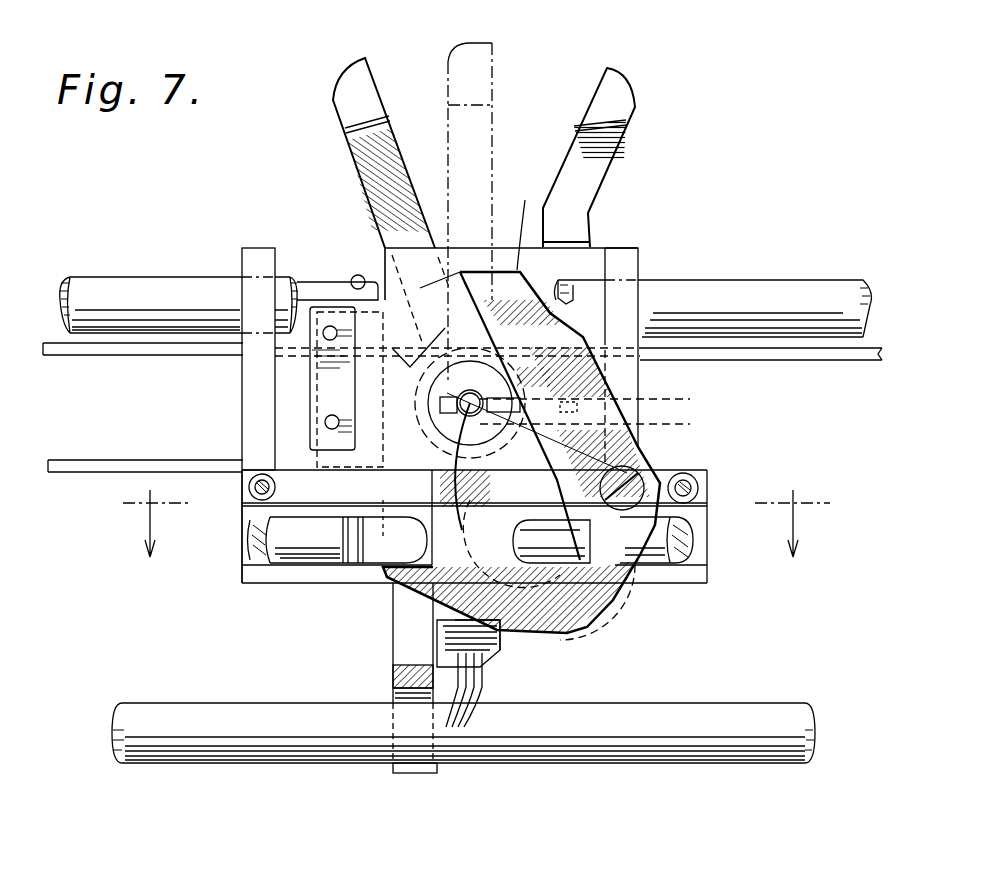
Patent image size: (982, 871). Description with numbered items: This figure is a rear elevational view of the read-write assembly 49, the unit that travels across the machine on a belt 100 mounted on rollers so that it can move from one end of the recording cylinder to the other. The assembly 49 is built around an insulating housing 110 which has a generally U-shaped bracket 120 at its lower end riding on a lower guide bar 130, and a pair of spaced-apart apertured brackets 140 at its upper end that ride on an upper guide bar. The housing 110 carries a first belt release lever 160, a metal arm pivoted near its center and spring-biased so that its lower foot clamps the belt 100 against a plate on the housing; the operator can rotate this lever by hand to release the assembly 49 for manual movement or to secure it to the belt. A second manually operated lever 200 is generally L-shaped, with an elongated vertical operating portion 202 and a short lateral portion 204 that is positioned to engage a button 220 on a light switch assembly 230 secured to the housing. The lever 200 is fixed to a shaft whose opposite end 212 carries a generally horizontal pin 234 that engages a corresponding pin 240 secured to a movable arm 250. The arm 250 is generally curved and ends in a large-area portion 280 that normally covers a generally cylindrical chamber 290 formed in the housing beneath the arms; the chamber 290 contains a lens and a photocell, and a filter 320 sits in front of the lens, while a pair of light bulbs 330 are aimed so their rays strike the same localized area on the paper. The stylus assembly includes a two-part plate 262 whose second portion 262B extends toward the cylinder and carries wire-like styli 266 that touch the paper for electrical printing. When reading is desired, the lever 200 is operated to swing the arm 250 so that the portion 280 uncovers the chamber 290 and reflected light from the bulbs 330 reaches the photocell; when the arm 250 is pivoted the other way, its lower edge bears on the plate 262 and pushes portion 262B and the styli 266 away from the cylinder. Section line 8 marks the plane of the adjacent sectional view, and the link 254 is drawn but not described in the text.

The second manually operated lever 200 is at (373, 80).
The elongated vertical operating portion 202 is at (390, 237).
The light switch assembly 230 is at (350, 276).
The first belt release lever 160 is at (630, 108).
The link 254 is at (527, 219).
The insulating housing 110 is at (600, 248).
The read-write assembly 49 is at (679, 251).
The apertured brackets 140 is at (243, 418).
The belt 100 is at (88, 357).
The lower guide bar 130 is at (182, 755).
The U-shaped bracket 120 is at (240, 570).
The button 220 is at (473, 488).
The short lateral portion 204 is at (383, 508).
The light bulbs 330 is at (380, 563).
The filter 320 is at (551, 520).
The opposite end of shaft 212 is at (470, 427).
The horizontal pin 234 is at (500, 400).
The pin 240 is at (647, 430).
The movable arm 250 is at (635, 363).
The cylindrical chamber 290 is at (577, 630).
The large-area end portion 280 is at (580, 643).
The two-part plate 262 is at (430, 645).
The second portion of plate 262B is at (483, 660).
The styli 266 is at (479, 696).
The section line 8- 8 is at (476, 534).